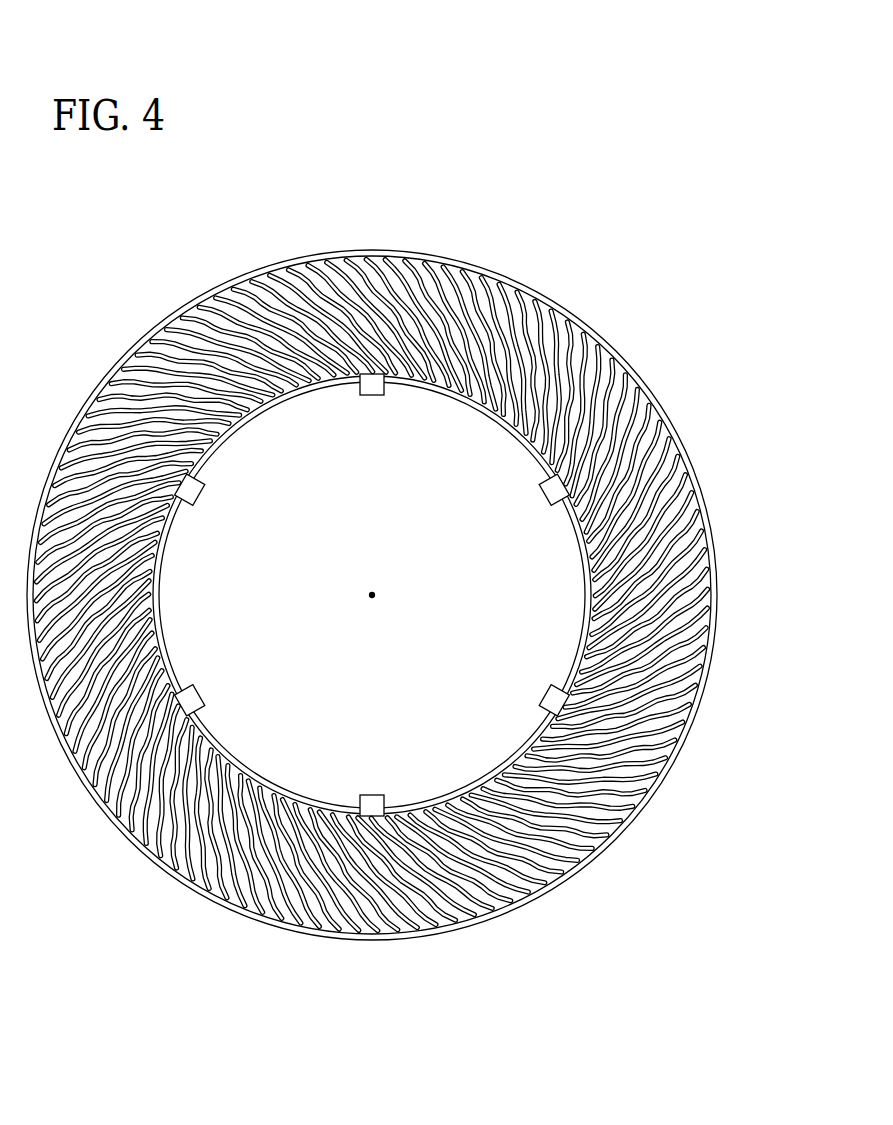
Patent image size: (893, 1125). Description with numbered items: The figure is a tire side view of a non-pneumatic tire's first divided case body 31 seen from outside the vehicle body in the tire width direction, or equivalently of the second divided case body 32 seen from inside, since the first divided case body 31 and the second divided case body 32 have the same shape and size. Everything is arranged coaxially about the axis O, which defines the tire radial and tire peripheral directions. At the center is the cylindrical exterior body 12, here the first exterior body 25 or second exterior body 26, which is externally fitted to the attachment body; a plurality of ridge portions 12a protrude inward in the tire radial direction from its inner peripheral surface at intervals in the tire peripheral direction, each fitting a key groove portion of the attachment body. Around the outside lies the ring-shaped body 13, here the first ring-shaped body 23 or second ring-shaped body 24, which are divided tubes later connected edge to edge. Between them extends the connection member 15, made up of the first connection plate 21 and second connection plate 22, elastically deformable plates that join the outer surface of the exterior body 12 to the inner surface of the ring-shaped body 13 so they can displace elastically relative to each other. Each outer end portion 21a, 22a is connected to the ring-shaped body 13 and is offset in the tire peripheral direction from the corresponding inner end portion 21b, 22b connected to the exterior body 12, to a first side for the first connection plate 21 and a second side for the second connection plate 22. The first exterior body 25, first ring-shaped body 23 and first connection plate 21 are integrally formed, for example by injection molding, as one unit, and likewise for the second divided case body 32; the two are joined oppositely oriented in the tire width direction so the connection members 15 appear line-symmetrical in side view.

The first divided case body 31 is at (390, 523).
The second divided case body 32 is at (630, 110).
The first connection plate 21 is at (380, 581).
The second connection plate 22 is at (380, 581).
The connection member 15 is at (367, 263).
The first ring-shaped body 23 is at (372, 554).
The second ring-shaped body 24 is at (372, 554).
The ring-shaped body 13 is at (507, 270).
The first exterior body 25 is at (466, 520).
The second exterior body 26 is at (466, 520).
The exterior body 12 is at (490, 410).
The ridge portion 12a is at (372, 396).
The outer end portion of the first connection plate 21a is at (380, 621).
The outer end portion of the second connection plate 22a is at (363, 928).
The inner end portion of the first connection plate 21b is at (380, 584).
The inner end portion of the second connection plate 22b is at (232, 768).
The axis O is at (372, 595).